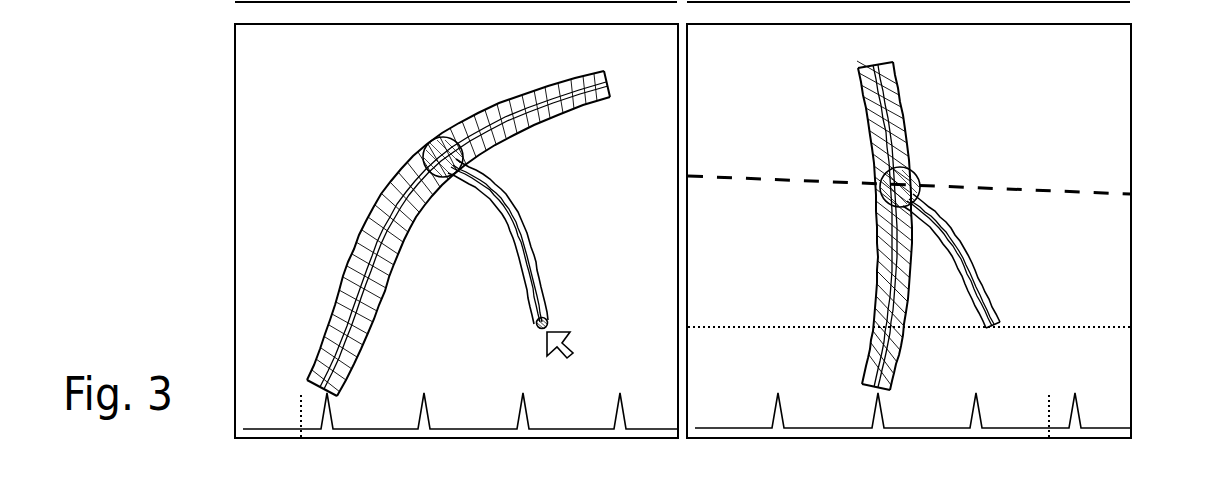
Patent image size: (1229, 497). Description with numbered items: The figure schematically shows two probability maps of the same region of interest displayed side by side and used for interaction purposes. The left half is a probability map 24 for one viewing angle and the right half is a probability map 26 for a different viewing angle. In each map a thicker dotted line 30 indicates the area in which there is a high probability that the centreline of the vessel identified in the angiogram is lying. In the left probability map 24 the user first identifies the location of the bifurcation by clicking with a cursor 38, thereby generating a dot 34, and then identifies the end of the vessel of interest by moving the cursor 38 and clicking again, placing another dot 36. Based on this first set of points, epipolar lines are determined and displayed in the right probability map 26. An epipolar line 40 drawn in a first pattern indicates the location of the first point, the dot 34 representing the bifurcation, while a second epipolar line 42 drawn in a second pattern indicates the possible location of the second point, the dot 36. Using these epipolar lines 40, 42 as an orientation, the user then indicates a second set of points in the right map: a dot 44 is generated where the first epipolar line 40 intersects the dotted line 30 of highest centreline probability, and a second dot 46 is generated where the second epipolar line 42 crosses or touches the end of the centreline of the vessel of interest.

The probability map 24 is at (258, 178).
The probability map 26 is at (1108, 255).
The thicker dotted line 30 is at (367, 285).
The dot 34 is at (432, 150).
The dot 36 is at (550, 316).
The cursor 38 is at (572, 350).
The epipolar line 40 is at (1122, 195).
The second epipolar line 42 is at (1105, 330).
The dot 44 is at (873, 165).
The second dot 46 is at (990, 327).